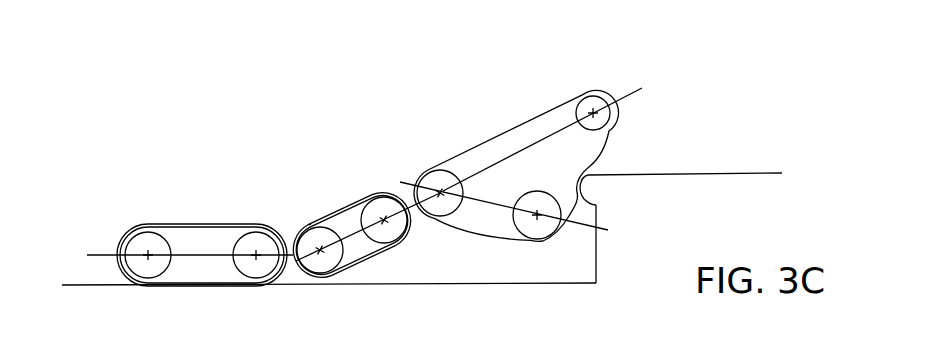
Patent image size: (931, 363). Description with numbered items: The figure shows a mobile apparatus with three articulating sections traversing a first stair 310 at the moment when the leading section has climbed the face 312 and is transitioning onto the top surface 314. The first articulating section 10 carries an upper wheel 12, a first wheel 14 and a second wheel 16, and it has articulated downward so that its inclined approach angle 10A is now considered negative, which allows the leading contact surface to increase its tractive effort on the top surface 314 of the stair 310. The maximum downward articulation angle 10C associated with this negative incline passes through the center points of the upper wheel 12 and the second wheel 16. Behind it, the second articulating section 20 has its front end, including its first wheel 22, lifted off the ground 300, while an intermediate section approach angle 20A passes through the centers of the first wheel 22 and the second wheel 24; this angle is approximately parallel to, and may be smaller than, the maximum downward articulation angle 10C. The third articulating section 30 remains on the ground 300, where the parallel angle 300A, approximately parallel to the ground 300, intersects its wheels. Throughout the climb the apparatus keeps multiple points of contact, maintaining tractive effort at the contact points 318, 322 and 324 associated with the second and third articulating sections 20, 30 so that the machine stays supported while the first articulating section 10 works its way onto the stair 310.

The first articulating section 10 is at (481, 116).
The inclined approach angle 10A is at (605, 232).
The maximum downward articulation angle 10C is at (632, 93).
The upper wheel 12 is at (590, 95).
The first wheel 14 is at (537, 240).
The second wheel 16 is at (443, 172).
The second articulating section 20 is at (318, 176).
The intermediate section approach angle 20A is at (368, 258).
The first wheel 22 is at (378, 192).
The second wheel 24 is at (310, 223).
The third articulating section 30 is at (200, 194).
The ground 300 is at (75, 287).
The parallel angle 300A is at (105, 253).
The first stair 310 is at (683, 172).
The face 312 is at (600, 208).
The top surface 314 is at (597, 166).
The contact point 318 is at (323, 287).
The contact point 322 is at (250, 287).
The contact point 324 is at (145, 287).